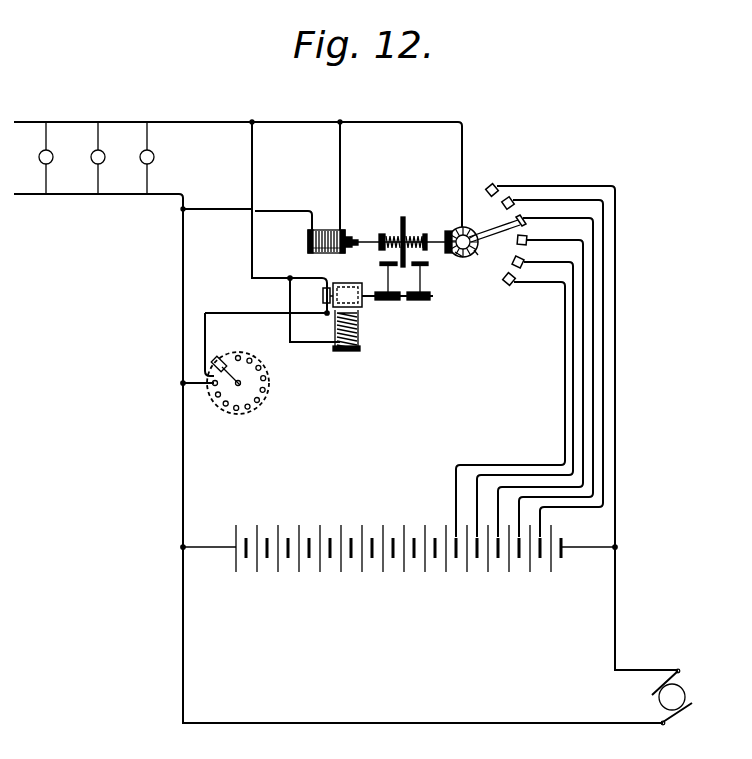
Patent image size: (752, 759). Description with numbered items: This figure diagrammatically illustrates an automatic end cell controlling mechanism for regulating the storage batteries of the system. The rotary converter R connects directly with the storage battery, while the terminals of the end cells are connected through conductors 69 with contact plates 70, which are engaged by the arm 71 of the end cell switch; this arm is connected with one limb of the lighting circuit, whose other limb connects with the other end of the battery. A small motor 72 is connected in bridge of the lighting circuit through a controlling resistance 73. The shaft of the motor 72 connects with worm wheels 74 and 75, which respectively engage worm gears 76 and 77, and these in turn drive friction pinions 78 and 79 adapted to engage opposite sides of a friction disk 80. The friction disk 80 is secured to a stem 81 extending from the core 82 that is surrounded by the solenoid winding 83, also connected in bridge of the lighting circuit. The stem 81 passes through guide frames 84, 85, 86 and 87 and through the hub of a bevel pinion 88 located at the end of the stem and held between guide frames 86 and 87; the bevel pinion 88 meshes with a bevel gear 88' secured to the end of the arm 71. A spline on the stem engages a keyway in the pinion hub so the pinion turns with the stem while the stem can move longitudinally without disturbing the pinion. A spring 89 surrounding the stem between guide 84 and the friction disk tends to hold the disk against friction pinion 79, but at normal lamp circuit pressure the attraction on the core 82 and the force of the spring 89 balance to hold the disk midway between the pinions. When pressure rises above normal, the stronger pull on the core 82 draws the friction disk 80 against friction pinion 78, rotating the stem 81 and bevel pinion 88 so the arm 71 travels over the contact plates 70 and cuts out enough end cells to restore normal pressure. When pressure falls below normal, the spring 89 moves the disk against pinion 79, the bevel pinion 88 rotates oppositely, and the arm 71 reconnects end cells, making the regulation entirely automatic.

The conductors 69 is at (590, 407).
The contact plates 70 is at (512, 193).
The arm 71 is at (494, 228).
The small motor 72 is at (349, 352).
The controlling resistance 73 is at (268, 405).
The worm wheel 74 is at (388, 302).
The worm wheel 75 is at (420, 302).
The worm gear 76 is at (118, 172).
The worm gear 77 is at (383, 572).
The friction pinion 78 is at (380, 263).
The friction pinion 79 is at (428, 265).
The friction disk 80 is at (404, 216).
The stem 81 is at (376, 238).
The core 82 is at (356, 235).
The solenoid winding 83 is at (333, 253).
The guide frame 84 is at (381, 235).
The guide frame 85 is at (415, 232).
The guide frame 86 is at (447, 230).
The guide frame 87 is at (466, 227).
The bevel pinion 88 is at (471, 284).
The bevel gear 88' is at (490, 263).
The spring 89 is at (394, 232).
The rotary converter R is at (685, 697).